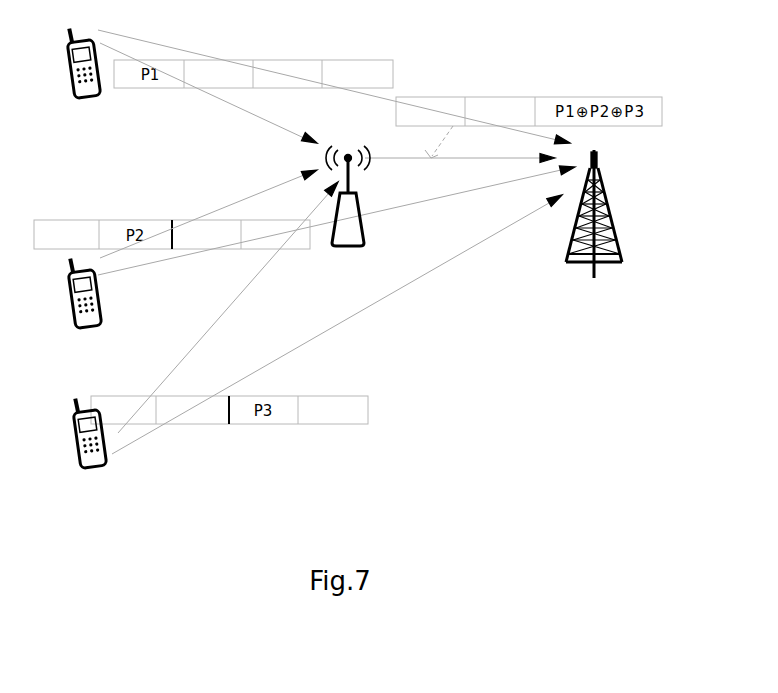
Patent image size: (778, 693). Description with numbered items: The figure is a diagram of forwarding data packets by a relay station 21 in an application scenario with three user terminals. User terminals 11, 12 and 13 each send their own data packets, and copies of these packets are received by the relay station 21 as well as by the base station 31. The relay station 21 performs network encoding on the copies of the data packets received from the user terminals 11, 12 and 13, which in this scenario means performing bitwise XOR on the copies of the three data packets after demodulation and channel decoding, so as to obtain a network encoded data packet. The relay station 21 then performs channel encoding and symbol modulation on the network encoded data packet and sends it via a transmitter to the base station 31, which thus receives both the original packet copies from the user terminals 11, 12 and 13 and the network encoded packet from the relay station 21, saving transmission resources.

The user terminal 11 is at (82, 73).
The user terminal 12 is at (83, 306).
The user terminal 13 is at (88, 447).
The relay station 21 is at (348, 211).
The base station 31 is at (594, 229).